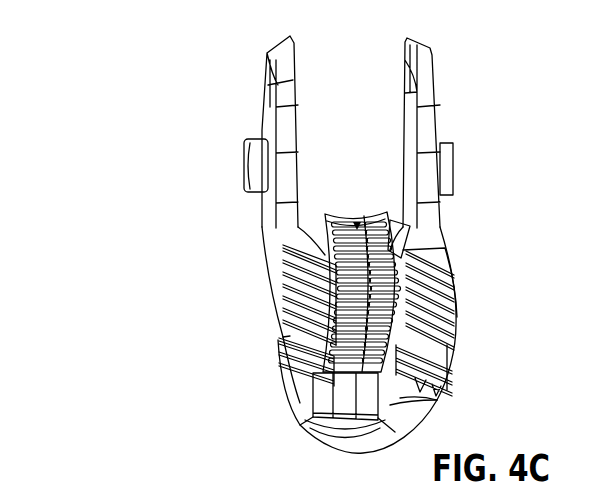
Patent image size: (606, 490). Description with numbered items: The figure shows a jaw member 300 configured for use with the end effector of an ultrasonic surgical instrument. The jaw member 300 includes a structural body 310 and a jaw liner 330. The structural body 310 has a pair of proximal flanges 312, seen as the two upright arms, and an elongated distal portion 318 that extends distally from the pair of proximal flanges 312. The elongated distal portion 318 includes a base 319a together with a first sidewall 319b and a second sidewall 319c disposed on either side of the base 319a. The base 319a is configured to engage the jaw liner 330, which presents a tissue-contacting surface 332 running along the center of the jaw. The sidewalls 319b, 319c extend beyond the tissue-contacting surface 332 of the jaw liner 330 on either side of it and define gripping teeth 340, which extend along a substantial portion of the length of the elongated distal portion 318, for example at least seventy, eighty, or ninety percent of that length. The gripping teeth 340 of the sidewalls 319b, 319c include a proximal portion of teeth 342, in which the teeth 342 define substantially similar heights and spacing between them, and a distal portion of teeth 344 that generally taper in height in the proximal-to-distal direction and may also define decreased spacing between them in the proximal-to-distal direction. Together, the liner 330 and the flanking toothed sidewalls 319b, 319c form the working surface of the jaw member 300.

The jaw member 300 is at (124, 121).
The proximal flanges 312 is at (267, 63).
The structural body 310 is at (456, 326).
The elongated distal portion 318 is at (402, 242).
The tissue-contacting surface 332 is at (358, 220).
The jaw liner 330 is at (348, 410).
The proximal portion of teeth 342 is at (254, 250).
The distal portion of teeth 344 is at (253, 337).
The gripping teeth 340 is at (452, 278).
The base 319a is at (313, 427).
The first sidewall 319b is at (300, 403).
The second sidewall 319c is at (393, 408).